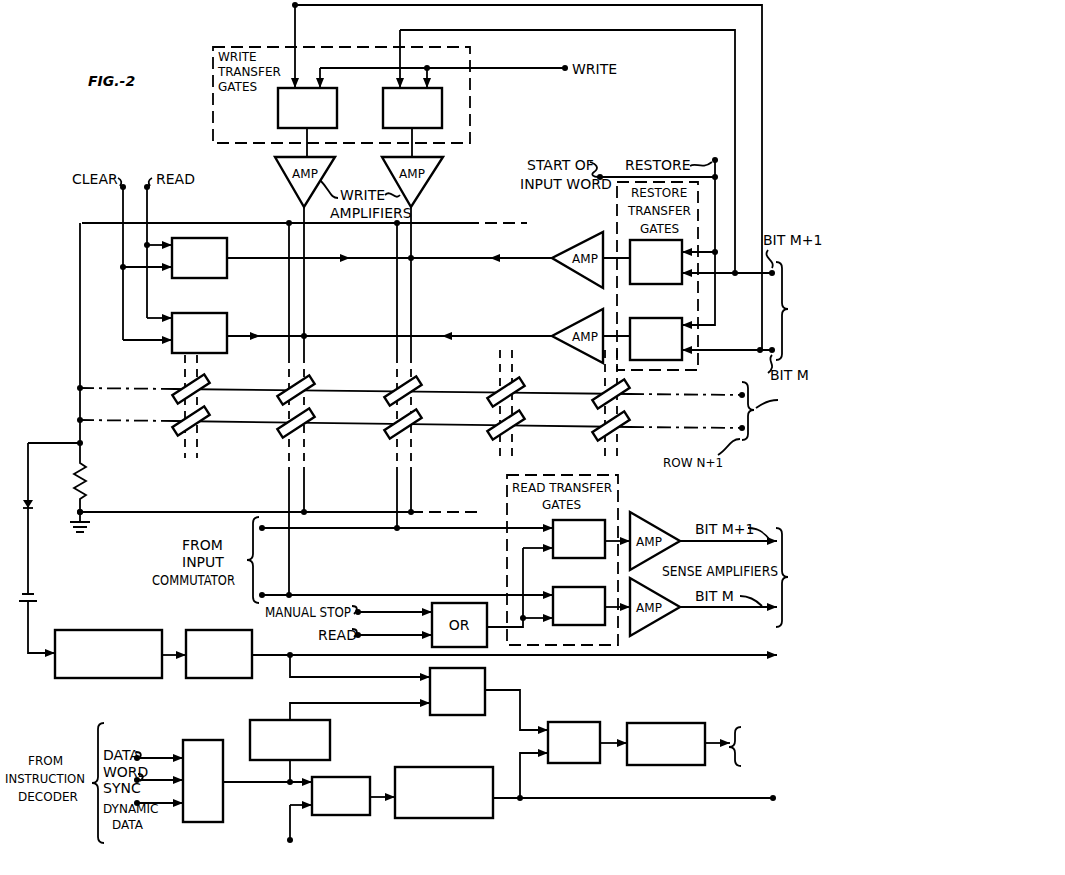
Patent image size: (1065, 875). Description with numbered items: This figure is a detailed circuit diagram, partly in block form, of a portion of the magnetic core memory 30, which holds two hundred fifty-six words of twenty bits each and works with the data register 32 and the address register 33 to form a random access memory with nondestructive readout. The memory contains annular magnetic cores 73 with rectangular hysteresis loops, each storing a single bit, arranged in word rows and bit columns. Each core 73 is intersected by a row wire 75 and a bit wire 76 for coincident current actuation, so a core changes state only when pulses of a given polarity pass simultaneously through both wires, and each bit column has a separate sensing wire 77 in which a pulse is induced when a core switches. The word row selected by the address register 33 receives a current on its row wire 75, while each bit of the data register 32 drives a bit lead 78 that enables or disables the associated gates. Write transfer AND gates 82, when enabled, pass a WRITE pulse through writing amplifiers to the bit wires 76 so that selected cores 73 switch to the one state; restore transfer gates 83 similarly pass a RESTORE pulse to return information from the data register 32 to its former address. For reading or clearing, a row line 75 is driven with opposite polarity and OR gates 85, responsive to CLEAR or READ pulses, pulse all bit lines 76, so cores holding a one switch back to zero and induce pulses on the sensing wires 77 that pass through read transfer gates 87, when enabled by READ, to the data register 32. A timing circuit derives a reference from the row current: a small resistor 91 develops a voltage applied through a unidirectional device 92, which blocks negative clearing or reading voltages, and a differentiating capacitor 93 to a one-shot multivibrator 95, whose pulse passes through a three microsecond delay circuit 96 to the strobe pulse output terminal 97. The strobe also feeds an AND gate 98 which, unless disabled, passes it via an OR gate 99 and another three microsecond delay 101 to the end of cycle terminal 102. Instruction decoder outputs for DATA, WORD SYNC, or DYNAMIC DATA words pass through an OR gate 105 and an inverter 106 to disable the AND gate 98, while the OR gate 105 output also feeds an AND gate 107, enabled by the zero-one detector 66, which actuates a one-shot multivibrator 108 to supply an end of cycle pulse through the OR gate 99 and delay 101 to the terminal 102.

The magnetic core memory 30 is at (69, 310).
The data register 32 is at (822, 354).
The address register 33 is at (809, 496).
The zero-one detector 66 is at (501, 847).
The magnetic cores 73 is at (389, 424).
The row wire 75 is at (466, 416).
The bit wire 76 is at (421, 447).
The sensing wire 77 is at (392, 447).
The bit leads 78 is at (758, 276).
The write transfer AND gates 82 is at (383, 108).
The restore transfer gates 83 is at (679, 288).
The OR gates 85 is at (215, 280).
The read transfer gates 87 is at (575, 587).
The resistor 91 is at (86, 482).
The unidirectional device 92 is at (31, 504).
The differentiating capacitor 93 is at (30, 592).
The one-shot multivibrator 95 is at (76, 612).
The three microsecond delay circuit 96 is at (201, 612).
The strobe pulse output terminal 97 is at (800, 664).
The AND gate 98 is at (486, 678).
The OR gate 99 is at (578, 722).
The three microsecond delay 101 is at (654, 721).
The terminal 102 is at (759, 752).
The OR gate 105 is at (223, 812).
The inverter 106 is at (320, 720).
The AND gate 107 is at (330, 777).
The one-shot multivibrator 108 is at (422, 760).